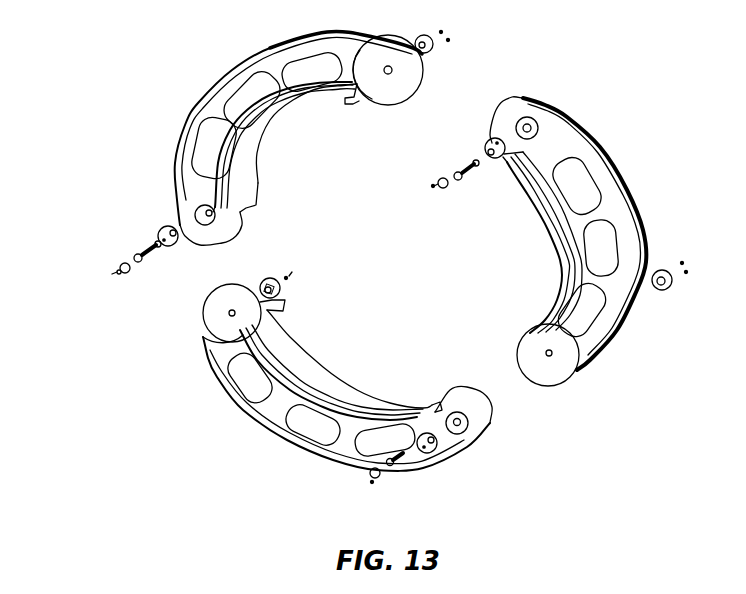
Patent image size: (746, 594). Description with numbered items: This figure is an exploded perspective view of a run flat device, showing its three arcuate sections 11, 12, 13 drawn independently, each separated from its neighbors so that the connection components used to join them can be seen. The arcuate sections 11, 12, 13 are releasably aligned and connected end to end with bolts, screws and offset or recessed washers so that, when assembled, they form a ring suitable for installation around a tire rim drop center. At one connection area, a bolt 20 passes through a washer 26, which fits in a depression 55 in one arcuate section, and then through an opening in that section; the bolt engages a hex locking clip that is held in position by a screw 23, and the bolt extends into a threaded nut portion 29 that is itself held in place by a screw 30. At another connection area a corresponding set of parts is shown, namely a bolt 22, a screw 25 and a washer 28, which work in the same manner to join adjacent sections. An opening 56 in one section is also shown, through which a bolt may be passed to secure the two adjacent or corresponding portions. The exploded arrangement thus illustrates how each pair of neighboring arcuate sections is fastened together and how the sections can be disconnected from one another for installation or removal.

The arcuate section 11 is at (240, 73).
The arcuate section 12 is at (270, 418).
The arcuate section 13 is at (614, 211).
The bolt 20 is at (133, 255).
The bolt 22 is at (462, 179).
The screw 23 is at (117, 270).
The screw 25 is at (434, 189).
The washer 26 is at (160, 229).
The washer 28 is at (485, 149).
The threaded nut portion 29 is at (282, 292).
The screw 30 is at (290, 277).
The depression 55 is at (200, 210).
The opening 56 is at (551, 357).